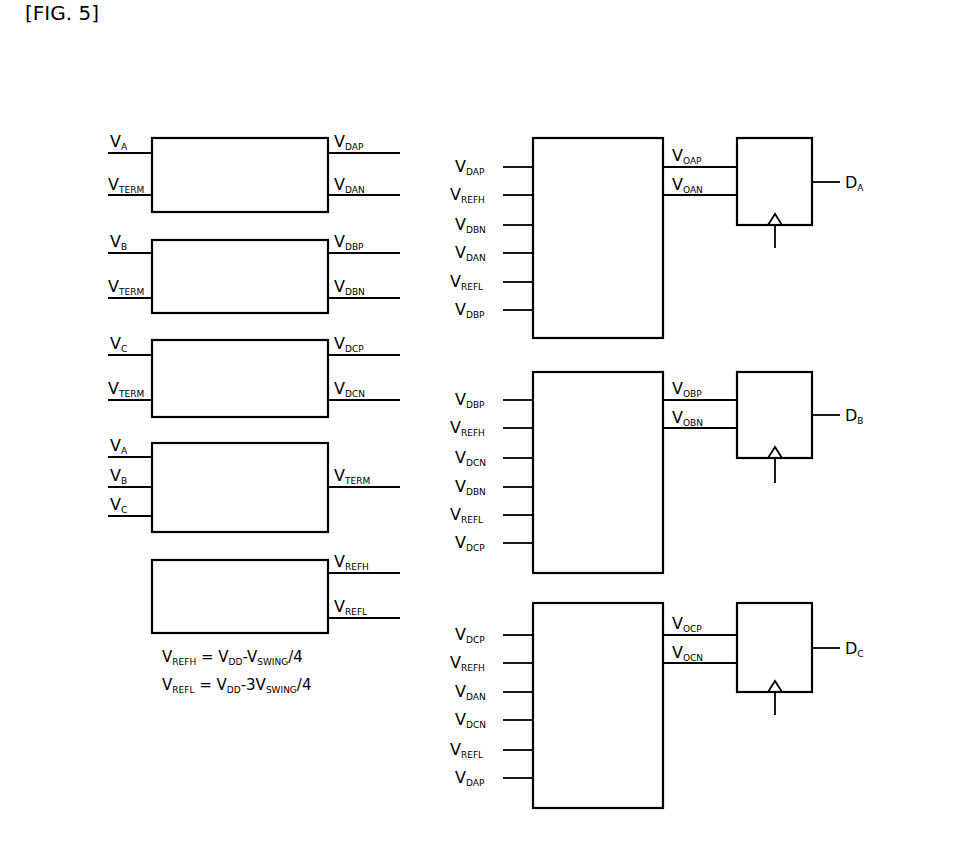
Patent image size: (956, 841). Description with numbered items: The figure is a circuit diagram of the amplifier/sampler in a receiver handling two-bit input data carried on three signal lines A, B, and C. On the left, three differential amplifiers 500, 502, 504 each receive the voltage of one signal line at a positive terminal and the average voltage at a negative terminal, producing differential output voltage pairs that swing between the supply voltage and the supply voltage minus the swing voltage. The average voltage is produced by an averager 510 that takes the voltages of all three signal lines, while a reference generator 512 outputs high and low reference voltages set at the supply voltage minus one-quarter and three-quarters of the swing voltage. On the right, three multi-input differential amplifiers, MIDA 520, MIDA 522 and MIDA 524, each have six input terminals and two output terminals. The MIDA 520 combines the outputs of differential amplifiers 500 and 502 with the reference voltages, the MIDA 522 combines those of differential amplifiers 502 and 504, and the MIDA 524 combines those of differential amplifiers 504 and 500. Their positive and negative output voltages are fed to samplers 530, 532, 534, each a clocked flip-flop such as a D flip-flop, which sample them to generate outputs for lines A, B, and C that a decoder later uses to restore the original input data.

The differential amplifier 500 is at (198, 138).
The differential amplifier 502 is at (142, 243).
The differential amplifier 504 is at (142, 343).
The averager 510 is at (142, 446).
The reference generator 512 is at (152, 603).
The MIDA 520 is at (590, 138).
The MIDA 522 is at (650, 372).
The MIDA 524 is at (650, 603).
The sampler 530 is at (776, 138).
The sampler 532 is at (788, 372).
The sampler 534 is at (782, 603).